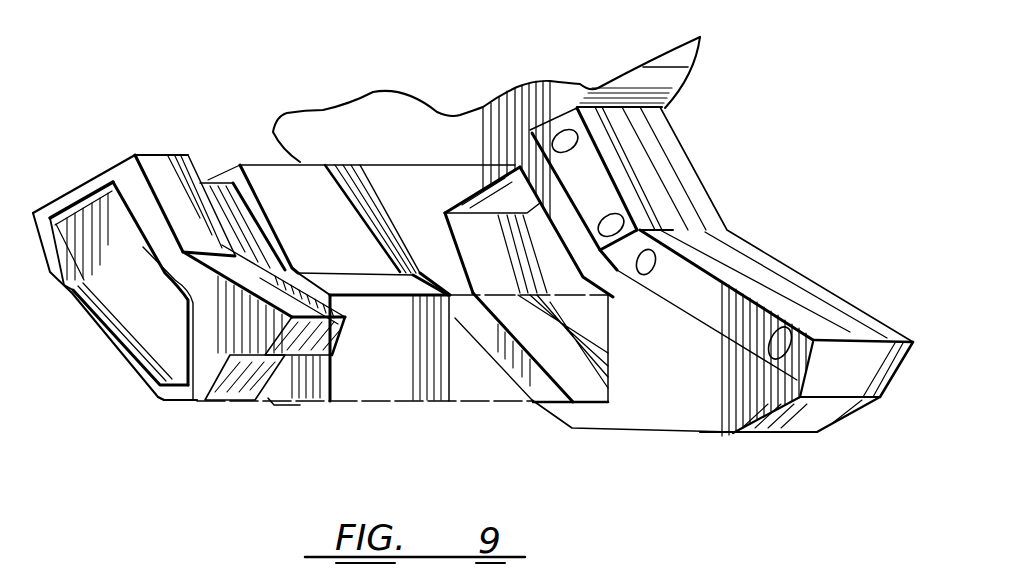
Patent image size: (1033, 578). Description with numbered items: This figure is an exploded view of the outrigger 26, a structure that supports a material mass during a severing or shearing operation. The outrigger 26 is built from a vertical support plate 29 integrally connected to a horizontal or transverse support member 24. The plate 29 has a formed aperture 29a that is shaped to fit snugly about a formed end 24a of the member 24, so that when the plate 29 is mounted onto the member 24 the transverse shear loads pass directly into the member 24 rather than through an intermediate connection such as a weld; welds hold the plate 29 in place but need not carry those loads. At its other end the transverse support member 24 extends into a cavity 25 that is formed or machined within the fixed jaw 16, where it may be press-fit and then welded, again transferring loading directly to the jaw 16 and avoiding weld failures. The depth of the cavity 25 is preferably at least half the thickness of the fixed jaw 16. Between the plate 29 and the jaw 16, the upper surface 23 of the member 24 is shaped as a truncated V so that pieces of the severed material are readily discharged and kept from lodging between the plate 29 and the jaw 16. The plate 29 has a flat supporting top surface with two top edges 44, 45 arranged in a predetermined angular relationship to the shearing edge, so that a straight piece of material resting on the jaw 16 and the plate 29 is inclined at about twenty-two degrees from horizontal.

The fixed jaw 16 is at (673, 393).
The upper surface 23 is at (290, 185).
The transverse support member 24 is at (390, 385).
The formed end 24a is at (147, 303).
The cavity 25 is at (565, 365).
The outrigger 26 is at (273, 400).
The vertical support plate 29 is at (158, 151).
The formed aperture 29a is at (158, 380).
The top edge 44 is at (185, 178).
The top edge 45 is at (247, 282).